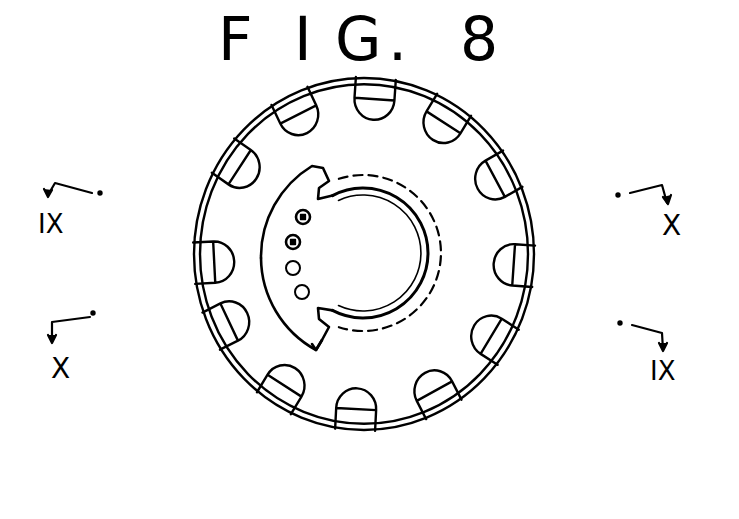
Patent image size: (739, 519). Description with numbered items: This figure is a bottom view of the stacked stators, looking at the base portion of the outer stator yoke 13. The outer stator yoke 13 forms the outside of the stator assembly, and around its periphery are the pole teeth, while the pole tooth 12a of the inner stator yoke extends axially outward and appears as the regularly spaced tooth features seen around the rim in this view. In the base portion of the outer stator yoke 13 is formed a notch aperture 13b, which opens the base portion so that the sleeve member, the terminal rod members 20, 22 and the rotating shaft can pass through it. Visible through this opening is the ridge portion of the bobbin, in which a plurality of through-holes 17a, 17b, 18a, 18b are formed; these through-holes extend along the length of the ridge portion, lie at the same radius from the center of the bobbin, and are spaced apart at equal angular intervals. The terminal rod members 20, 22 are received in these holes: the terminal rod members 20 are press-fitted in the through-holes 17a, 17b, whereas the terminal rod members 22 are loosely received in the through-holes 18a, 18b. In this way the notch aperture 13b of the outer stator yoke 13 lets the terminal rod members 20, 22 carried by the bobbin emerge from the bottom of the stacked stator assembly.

The pole tooth 12a is at (530, 272).
The outer stator yoke 13 is at (500, 238).
The notch aperture 13b is at (317, 355).
The through-hole 17a is at (300, 325).
The through-hole 17b is at (298, 299).
The through-hole 18a is at (288, 238).
The through-hole 18b is at (298, 212).
The terminal rod member 20 is at (286, 270).
The terminal rod member 22 is at (311, 216).